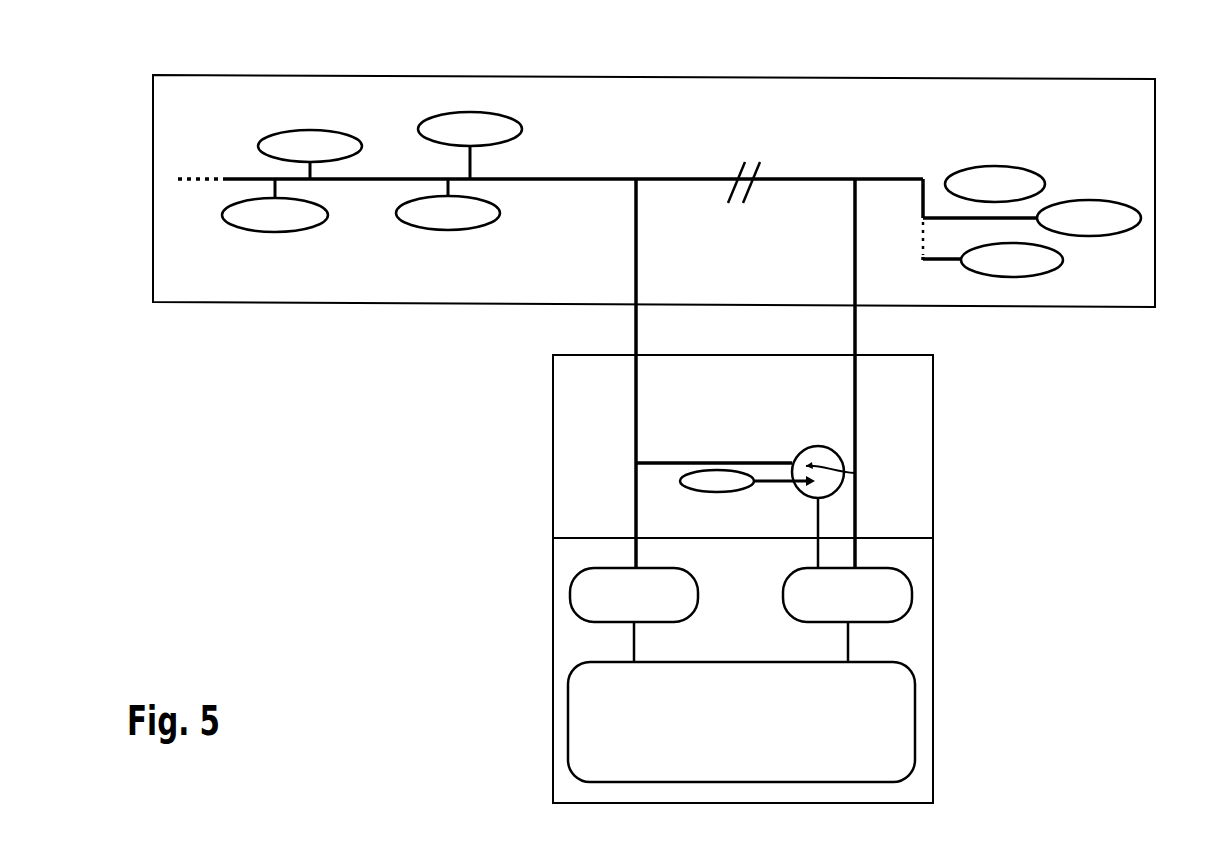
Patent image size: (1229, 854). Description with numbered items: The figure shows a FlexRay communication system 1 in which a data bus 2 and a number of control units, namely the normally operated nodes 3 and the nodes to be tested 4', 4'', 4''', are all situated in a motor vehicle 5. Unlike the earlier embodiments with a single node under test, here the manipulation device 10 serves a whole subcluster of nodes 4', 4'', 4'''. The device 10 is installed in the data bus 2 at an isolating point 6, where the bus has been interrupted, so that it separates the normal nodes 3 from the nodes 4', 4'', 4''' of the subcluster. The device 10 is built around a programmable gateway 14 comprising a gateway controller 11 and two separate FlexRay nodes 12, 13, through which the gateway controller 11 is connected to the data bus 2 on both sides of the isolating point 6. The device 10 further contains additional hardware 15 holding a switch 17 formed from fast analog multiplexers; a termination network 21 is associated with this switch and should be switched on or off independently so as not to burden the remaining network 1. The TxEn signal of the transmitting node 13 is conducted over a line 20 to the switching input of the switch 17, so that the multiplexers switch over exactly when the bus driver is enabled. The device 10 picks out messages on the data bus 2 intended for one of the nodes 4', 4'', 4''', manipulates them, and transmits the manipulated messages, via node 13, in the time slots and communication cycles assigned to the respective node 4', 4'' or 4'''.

The communication system 1 is at (763, 95).
The data bus 2 is at (590, 180).
The communication stations 3 is at (262, 146).
The node to be tested 4' is at (1022, 180).
The node to be tested 4'' is at (1120, 217).
The node to be tested 4''' is at (1043, 266).
The motor vehicle 5 is at (352, 82).
The isolating point 6 is at (740, 207).
The manipulation device 10 is at (1080, 550).
The gateway controller 11 is at (900, 723).
The FlexRay node 12 is at (575, 593).
The FlexRay node 13 is at (905, 596).
The programmable gateway 14 is at (935, 642).
The additional hardware 15 is at (935, 383).
The switch 17 is at (821, 454).
The line 20 is at (814, 524).
The termination network 21 is at (702, 490).